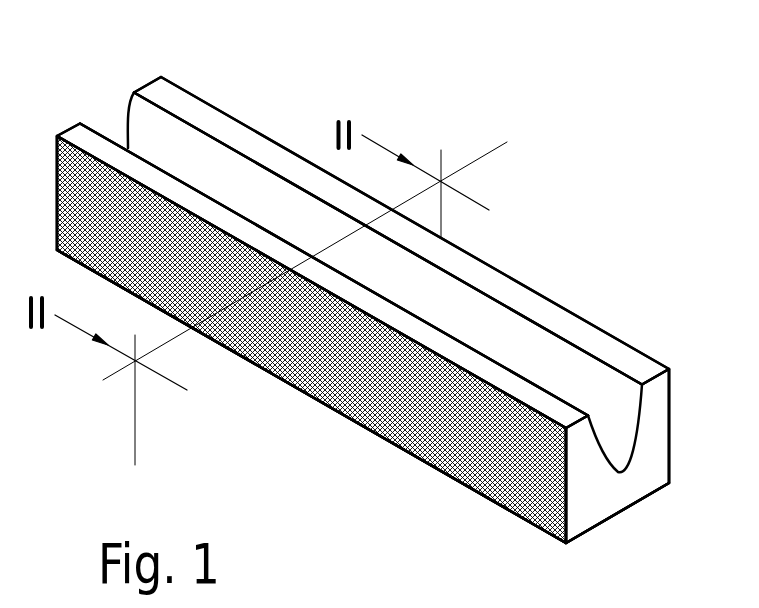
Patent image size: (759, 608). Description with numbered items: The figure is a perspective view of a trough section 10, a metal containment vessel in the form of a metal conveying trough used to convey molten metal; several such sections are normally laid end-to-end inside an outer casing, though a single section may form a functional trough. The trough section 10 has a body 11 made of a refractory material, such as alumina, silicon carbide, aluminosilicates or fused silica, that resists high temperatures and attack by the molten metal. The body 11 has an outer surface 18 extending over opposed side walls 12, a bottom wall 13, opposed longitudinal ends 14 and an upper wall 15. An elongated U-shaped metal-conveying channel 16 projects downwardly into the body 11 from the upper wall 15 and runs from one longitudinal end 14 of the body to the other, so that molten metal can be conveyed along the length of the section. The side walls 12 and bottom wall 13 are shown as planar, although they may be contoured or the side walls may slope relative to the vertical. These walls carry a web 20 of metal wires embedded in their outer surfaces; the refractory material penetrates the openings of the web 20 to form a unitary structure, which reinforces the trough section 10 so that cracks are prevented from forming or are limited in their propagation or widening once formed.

The trough section 10 is at (238, 74).
The body 11 is at (92, 140).
The side walls 12 is at (670, 417).
The bottom wall 13 is at (607, 522).
The longitudinal ends 14 is at (131, 110).
The upper wall 15 is at (592, 337).
The metal-conveying channel 16 is at (623, 473).
The outer surface 18 is at (283, 372).
The web 20 is at (417, 458).